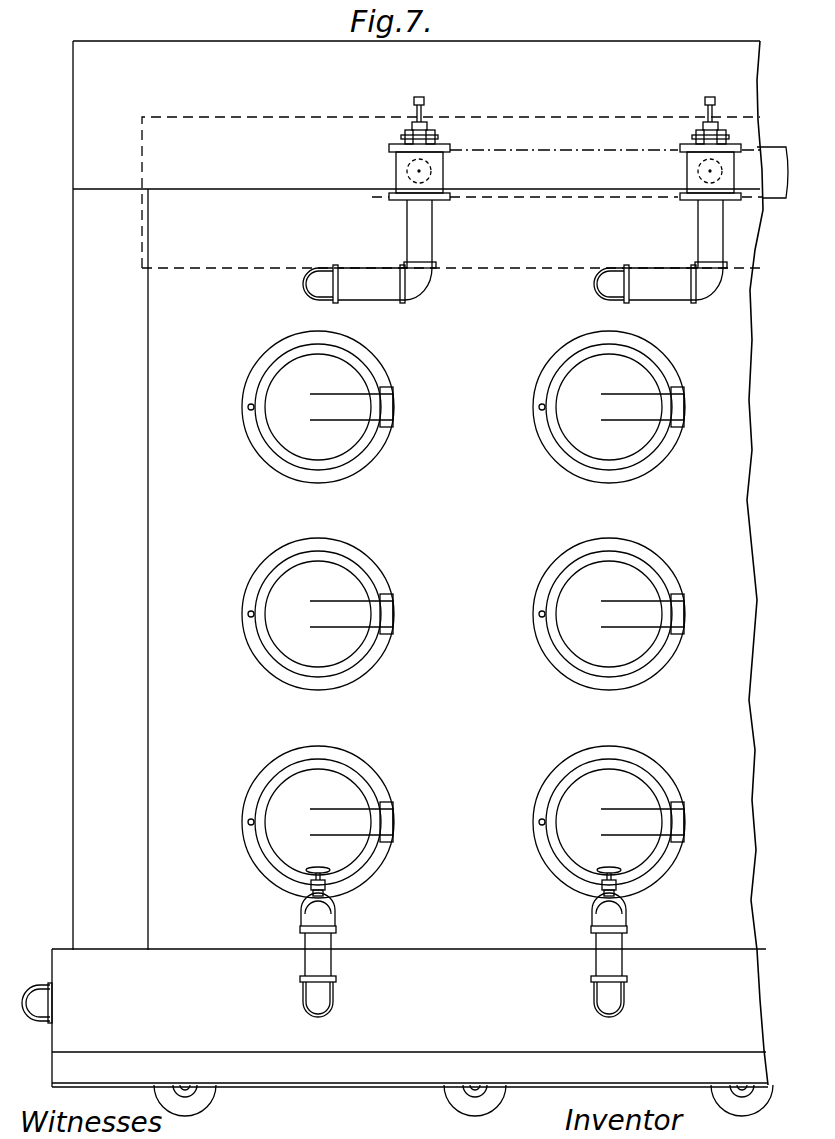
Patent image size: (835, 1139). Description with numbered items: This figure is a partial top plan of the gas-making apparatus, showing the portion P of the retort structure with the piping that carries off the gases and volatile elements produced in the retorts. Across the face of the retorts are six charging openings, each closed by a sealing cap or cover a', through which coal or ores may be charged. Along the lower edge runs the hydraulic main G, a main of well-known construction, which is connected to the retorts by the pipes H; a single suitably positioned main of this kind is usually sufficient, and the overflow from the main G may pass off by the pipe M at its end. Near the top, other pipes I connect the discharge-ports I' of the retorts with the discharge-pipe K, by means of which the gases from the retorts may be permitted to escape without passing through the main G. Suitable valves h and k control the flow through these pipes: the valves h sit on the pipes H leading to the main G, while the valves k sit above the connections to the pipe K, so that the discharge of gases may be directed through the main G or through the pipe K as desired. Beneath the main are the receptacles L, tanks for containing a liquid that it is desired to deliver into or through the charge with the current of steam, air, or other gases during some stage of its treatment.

The frame partition P is at (420, 563).
The discharge-pipe K is at (778, 147).
The valve k is at (432, 133).
The pipe I is at (530, 251).
The discharge-port I' is at (446, 284).
The sealing cap a' is at (463, 614).
The valve h is at (338, 906).
The pipe H is at (331, 965).
The hydraulic main G is at (410, 1018).
The pipe M is at (37, 987).
The receptacle L is at (205, 1100).